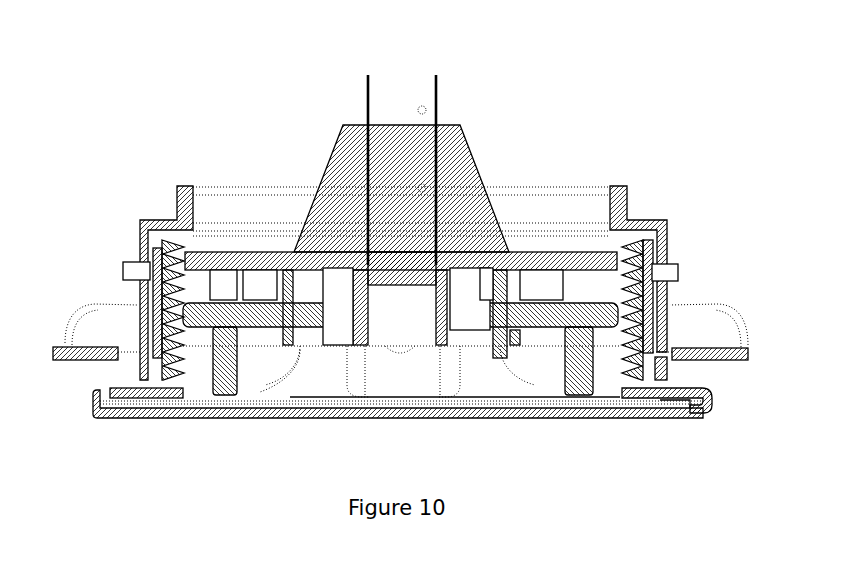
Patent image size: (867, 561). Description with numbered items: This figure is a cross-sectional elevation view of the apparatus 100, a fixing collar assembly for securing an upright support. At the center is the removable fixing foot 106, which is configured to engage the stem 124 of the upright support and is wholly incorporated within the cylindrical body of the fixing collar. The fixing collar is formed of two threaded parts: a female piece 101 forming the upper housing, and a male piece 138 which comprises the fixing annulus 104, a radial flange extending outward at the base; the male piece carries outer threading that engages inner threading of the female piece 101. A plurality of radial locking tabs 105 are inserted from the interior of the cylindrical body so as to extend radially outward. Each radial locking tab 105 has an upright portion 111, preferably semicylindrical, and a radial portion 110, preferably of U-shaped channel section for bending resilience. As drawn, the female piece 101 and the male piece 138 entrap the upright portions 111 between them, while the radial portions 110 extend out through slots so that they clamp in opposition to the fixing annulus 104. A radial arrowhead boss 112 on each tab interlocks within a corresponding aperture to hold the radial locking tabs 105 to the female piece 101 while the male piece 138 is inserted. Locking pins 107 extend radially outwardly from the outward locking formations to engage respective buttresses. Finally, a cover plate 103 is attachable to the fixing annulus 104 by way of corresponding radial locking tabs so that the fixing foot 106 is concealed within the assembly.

The apparatus 100 is at (626, 84).
The stem 124 is at (438, 85).
The removable fixing foot 106 is at (473, 170).
The female piece 101 is at (653, 200).
The upright portion 111 is at (660, 312).
The radial arrowhead boss 112 is at (680, 282).
The radial portion 110 is at (737, 347).
The radial locking tab 105 is at (748, 355).
The locking pin 107 is at (247, 333).
The fixing annulus 104 is at (700, 397).
The male piece 138 is at (667, 400).
The cover plate 103 is at (582, 417).